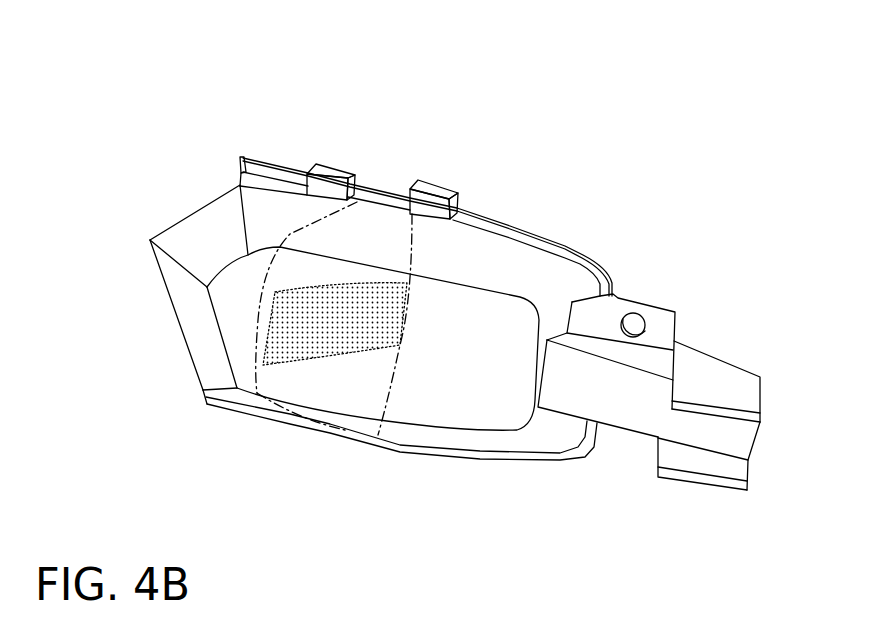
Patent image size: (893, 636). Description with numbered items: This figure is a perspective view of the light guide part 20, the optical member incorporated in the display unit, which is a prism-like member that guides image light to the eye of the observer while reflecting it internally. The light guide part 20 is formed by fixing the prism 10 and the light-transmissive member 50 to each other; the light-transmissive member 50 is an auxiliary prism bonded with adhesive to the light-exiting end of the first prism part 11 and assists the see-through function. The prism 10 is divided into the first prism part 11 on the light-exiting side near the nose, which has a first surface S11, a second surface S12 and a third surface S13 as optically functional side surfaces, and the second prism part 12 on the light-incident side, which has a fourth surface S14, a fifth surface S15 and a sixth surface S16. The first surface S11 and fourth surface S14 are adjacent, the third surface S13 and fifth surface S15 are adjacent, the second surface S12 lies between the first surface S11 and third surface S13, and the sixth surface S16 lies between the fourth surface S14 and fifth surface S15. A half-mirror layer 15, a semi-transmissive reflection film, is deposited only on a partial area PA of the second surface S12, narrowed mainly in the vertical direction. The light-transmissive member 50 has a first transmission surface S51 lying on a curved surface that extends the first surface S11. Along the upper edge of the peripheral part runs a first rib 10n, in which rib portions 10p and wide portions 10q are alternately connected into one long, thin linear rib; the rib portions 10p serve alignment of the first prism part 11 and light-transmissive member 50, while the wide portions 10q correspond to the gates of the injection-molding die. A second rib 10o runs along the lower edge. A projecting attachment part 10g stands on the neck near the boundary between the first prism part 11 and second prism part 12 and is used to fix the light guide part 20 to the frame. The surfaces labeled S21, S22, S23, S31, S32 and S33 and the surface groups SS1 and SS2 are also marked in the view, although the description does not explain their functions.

The prism 10 is at (497, 415).
The attachment part 10g is at (637, 313).
The first rib 10n is at (433, 112).
The second rib 10o is at (468, 455).
The rib portion 10p is at (300, 168).
The wide portion 10q is at (338, 177).
The first prism part 11 is at (535, 293).
The second prism part 12 is at (657, 358).
The half-mirror layer 15 is at (263, 400).
The light guide part 20 is at (732, 188).
The light-transmissive member 50 is at (233, 342).
The first surface S11 is at (431, 372).
The second surface S12 is at (335, 385).
The third surface S13 is at (477, 347).
The fourth surface S14 is at (605, 400).
The fifth surface S15 is at (708, 377).
The sixth surface S16 is at (685, 430).
The surface S21 is at (710, 467).
The surface S22 is at (728, 395).
The surface S23 is at (750, 443).
The surface S31 is at (228, 230).
The surface S32 is at (195, 327).
The surface S33 is at (380, 435).
The first transmission surface S51 is at (235, 300).
The first side surface group SS1 is at (585, 178).
The second side surface group SS2 is at (450, 520).